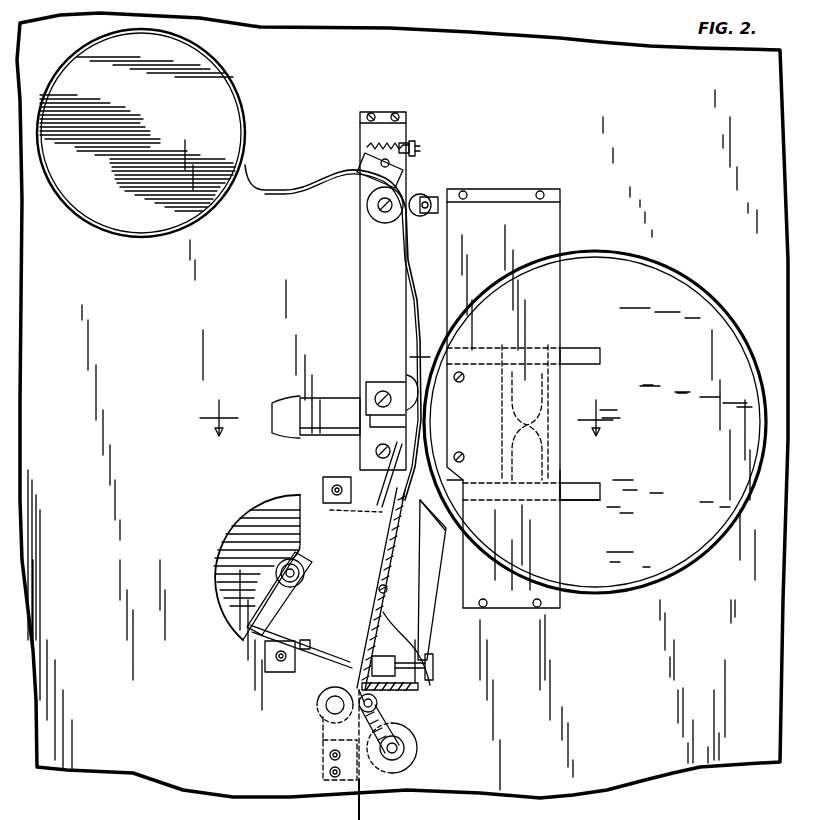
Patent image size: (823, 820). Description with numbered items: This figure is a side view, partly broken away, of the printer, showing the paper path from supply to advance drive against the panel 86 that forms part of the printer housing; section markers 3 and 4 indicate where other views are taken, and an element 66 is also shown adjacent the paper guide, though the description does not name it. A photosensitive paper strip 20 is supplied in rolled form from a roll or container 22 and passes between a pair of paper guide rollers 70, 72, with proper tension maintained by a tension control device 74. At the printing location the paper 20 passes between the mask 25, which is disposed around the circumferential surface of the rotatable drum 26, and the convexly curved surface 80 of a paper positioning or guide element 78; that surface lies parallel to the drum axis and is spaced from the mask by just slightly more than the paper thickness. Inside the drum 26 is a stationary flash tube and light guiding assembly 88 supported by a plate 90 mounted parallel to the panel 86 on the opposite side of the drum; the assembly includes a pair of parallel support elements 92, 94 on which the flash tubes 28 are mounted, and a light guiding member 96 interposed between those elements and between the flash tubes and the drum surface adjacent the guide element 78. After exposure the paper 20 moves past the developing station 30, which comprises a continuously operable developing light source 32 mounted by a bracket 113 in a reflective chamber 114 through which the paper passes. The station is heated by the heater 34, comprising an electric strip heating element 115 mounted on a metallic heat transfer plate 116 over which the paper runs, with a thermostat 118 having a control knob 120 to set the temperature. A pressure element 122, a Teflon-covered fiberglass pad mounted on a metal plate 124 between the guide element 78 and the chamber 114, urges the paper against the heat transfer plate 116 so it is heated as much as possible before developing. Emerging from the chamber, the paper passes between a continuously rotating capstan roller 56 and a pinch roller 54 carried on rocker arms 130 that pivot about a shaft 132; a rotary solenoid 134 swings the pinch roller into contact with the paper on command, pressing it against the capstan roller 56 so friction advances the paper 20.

The section line 3- 3 is at (406, 426).
The section line 4- 4 is at (426, 432).
The paper strip 20 is at (272, 193).
The roll 22 is at (235, 80).
The mask 25 is at (712, 303).
The drum 26 is at (745, 342).
The flash tubes 28 is at (538, 457).
The developing station 30 is at (358, 596).
The developing light source 32 is at (305, 572).
The heater 34 is at (420, 617).
The pinch roller 54 is at (372, 698).
The capstan roller 56 is at (318, 704).
The plunger 66 is at (350, 412).
The paper guide roller 70 is at (372, 211).
The paper guide roller 72 is at (428, 194).
The tension control device 74 is at (405, 175).
The paper guide element 78 is at (372, 420).
The convexly curved surface 80 is at (405, 408).
The panel 86 is at (594, 62).
The flash tube and light guiding assembly 88 is at (569, 483).
The plate 90 is at (555, 232).
The support element 92 is at (565, 351).
The support element 94 is at (575, 503).
The light guiding member 96 is at (449, 480).
The bracket 113 is at (270, 615).
The chamber 114 is at (243, 513).
The strip heating element 115 is at (384, 626).
The heat transfer plate 116 is at (387, 593).
The thermostat 118 is at (412, 688).
The control knob 120 is at (436, 666).
The pressure element 122 is at (377, 474).
The metal plate 124 is at (352, 509).
The rocker arms 130 is at (377, 712).
The shaft 132 is at (398, 748).
The rotary solenoid 134 is at (405, 765).